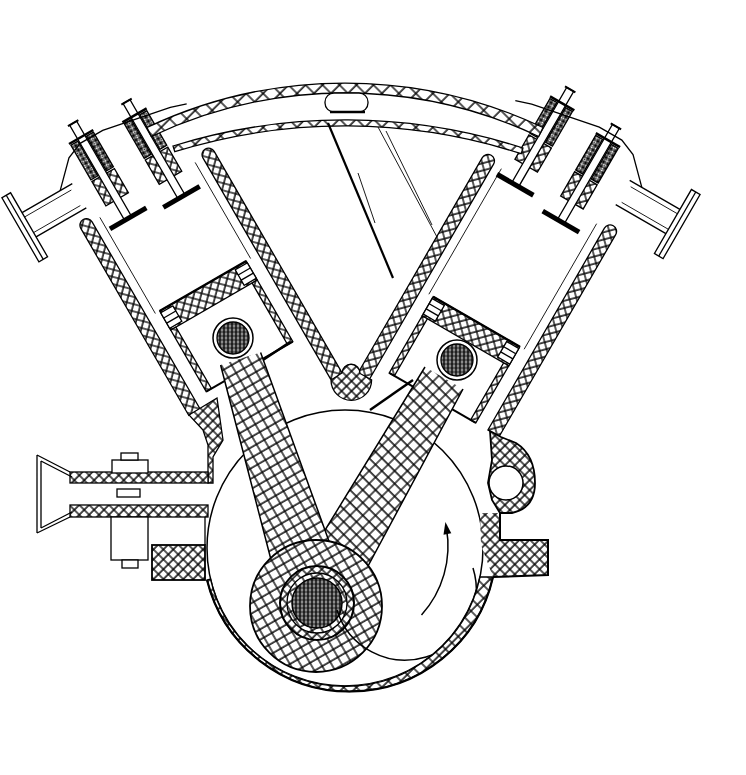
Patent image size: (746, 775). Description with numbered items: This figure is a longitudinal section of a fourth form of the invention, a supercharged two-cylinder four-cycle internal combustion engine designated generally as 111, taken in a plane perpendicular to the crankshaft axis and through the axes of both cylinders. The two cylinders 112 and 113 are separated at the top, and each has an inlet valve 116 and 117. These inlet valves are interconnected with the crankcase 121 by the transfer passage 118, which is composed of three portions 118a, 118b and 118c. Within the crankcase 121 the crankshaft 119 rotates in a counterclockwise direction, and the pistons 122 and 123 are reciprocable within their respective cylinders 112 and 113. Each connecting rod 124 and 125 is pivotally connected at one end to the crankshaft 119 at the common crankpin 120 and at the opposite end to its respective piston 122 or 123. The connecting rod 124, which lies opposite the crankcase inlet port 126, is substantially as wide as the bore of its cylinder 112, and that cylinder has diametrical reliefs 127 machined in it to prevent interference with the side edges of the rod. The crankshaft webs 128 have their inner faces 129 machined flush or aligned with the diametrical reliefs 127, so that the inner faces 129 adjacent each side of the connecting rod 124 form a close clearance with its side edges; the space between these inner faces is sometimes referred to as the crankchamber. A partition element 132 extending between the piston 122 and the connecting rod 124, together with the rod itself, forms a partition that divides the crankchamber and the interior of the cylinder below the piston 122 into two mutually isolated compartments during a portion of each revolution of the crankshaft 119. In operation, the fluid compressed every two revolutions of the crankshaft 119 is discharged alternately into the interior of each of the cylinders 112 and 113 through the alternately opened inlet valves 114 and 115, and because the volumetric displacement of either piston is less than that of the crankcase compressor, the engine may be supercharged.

The engine 111 is at (556, 71).
The cylinder 112 is at (574, 327).
The cylinder 113 is at (118, 305).
The inlet valve 114 is at (523, 190).
The inlet valve 115 is at (250, 203).
The inlet valve 116 is at (596, 273).
The inlet valve 117 is at (88, 268).
The transfer passage 118 is at (360, 60).
The transfer passage portion 118a is at (265, 90).
The transfer passage portion 118b is at (372, 233).
The transfer passage portion 118c is at (540, 487).
The crankshaft 119 is at (447, 610).
The crankpin 120 is at (420, 668).
The crankcase 121 is at (453, 653).
The piston 122 is at (520, 372).
The piston 123 is at (142, 326).
The connecting rod 124 is at (393, 512).
The connecting rod 125 is at (240, 408).
The crankcase inlet port 126 is at (213, 490).
The diametrical reliefs 127 is at (447, 438).
The crankshaft webs 128 is at (460, 580).
The inner faces of crankshaft webs 129 is at (453, 597).
The partition element 132 is at (540, 388).